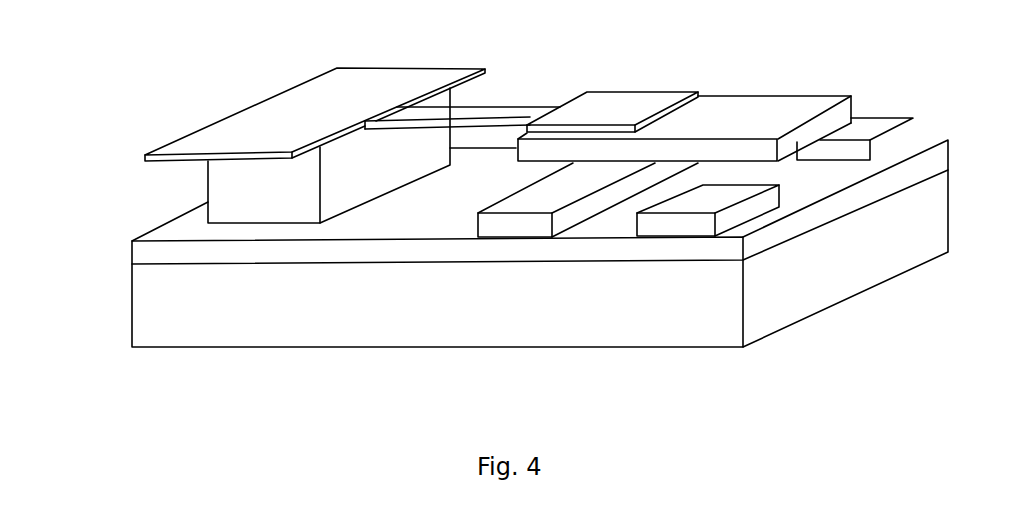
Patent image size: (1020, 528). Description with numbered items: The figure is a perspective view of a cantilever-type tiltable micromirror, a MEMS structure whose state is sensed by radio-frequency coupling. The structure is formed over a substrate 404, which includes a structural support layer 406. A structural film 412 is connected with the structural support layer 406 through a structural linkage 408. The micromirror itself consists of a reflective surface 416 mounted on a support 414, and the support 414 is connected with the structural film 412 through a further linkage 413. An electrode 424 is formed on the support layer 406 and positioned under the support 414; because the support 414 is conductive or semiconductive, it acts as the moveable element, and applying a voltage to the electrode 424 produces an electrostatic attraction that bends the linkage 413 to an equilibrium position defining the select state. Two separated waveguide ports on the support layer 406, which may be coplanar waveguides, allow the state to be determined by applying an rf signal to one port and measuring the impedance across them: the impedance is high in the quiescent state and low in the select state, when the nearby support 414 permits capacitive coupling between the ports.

The substrate 404 is at (848, 282).
The structural support layer 406 is at (150, 255).
The structural linkage 408 is at (220, 193).
The structural film 412 is at (407, 77).
The linkage 413 is at (515, 102).
The support 414 is at (747, 103).
The reflective surface 416 is at (620, 102).
The electrode 424 is at (523, 201).